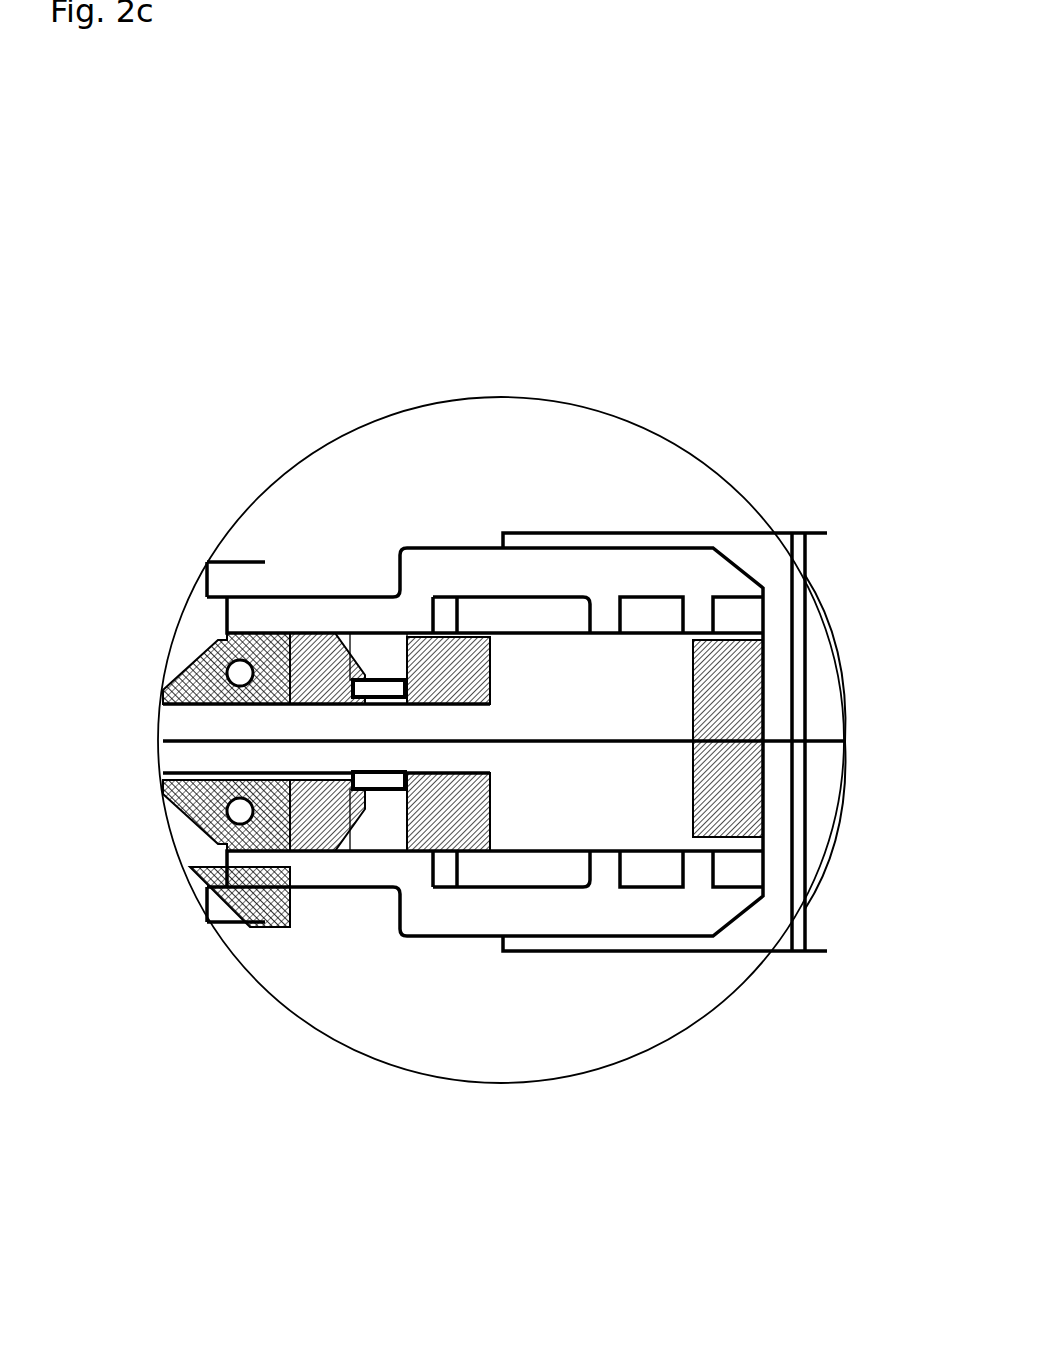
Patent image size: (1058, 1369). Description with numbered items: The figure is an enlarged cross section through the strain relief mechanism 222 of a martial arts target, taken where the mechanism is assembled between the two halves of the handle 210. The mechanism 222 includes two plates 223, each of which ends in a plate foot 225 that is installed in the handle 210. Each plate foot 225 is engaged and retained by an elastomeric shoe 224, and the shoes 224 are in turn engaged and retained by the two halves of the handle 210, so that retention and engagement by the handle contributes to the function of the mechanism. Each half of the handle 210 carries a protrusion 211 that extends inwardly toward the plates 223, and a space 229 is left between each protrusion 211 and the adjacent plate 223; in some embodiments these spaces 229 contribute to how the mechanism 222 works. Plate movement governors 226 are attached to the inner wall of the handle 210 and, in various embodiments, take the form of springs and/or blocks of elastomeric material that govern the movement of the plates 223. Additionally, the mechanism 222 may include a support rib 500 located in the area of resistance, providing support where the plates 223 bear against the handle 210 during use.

The handle 210 is at (557, 548).
The protrusion 211 is at (383, 655).
The strain relief mechanism 222 is at (394, 410).
The plate 223 is at (265, 706).
The elastomeric shoe 224 is at (482, 790).
The plate foot 225 is at (647, 708).
The plate movement governor 226 is at (215, 650).
The space 229 is at (370, 685).
The support rib 500 is at (338, 650).